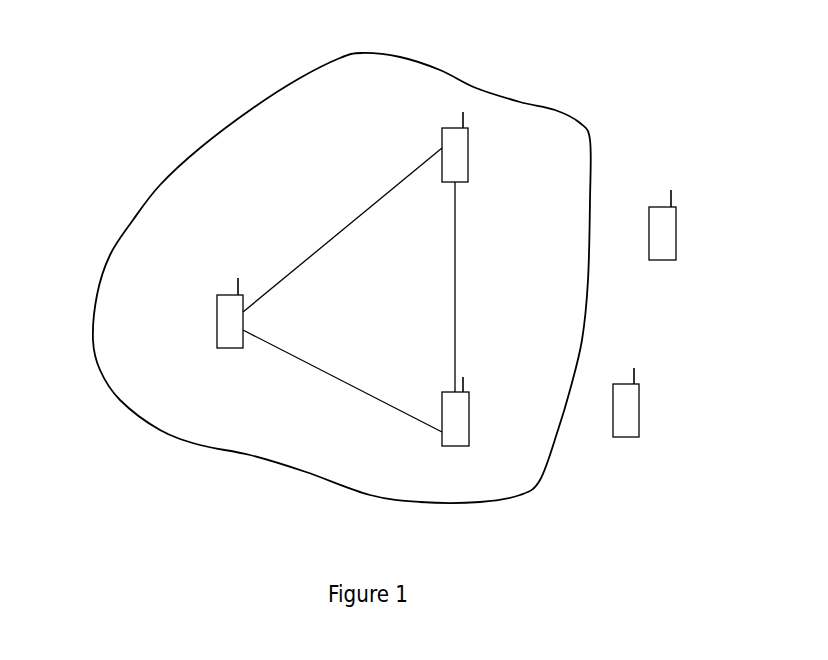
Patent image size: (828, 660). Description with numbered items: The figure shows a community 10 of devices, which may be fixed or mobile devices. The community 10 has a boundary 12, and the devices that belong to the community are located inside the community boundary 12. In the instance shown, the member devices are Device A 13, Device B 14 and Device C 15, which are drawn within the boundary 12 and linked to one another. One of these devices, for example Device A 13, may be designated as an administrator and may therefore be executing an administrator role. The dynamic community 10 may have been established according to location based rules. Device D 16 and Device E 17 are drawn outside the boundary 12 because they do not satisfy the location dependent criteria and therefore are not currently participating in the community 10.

The community 10 is at (140, 65).
The boundary 12 is at (94, 347).
The Device A 13 is at (217, 337).
The Device B 14 is at (442, 446).
The Device C 15 is at (466, 172).
The Device D 16 is at (636, 427).
The Device E 17 is at (670, 250).